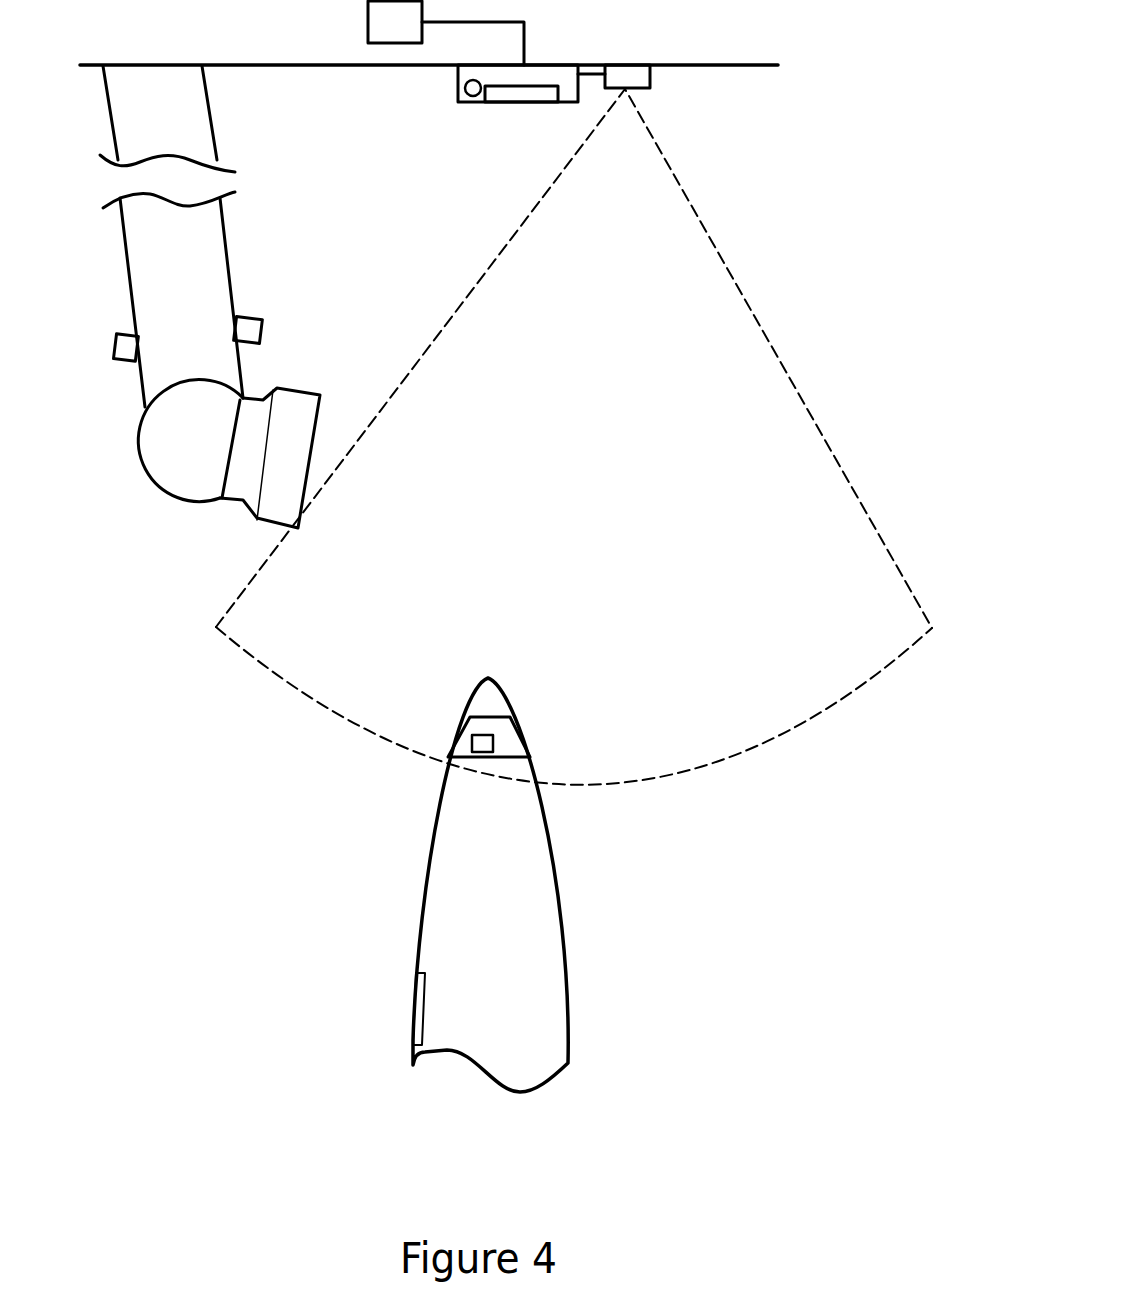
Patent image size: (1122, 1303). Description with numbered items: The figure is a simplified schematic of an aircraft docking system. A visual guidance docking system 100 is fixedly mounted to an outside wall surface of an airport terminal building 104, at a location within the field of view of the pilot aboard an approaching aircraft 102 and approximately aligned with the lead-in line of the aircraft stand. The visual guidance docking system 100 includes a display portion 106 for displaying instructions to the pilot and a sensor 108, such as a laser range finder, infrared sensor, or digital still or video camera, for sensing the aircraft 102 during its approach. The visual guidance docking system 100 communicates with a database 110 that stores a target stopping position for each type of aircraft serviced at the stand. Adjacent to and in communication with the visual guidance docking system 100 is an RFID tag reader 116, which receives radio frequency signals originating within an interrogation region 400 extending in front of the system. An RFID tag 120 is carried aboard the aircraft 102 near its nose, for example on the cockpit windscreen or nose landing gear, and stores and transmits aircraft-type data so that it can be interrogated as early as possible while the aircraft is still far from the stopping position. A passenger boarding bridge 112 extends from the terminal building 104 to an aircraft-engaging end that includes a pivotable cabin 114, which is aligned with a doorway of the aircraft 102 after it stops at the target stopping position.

The visual guidance docking system 100 is at (562, 102).
The aircraft 102 is at (568, 1000).
The airport terminal building 104 is at (727, 54).
The display portion 106 is at (508, 102).
The sensor 108 is at (473, 103).
The database 110 is at (383, 43).
The passenger boarding bridge 112 is at (300, 329).
The pivotable cabin 114 is at (273, 520).
The RFID tag reader 116 is at (640, 89).
The RFID tag 120 is at (492, 740).
The interrogation region 400 is at (363, 703).